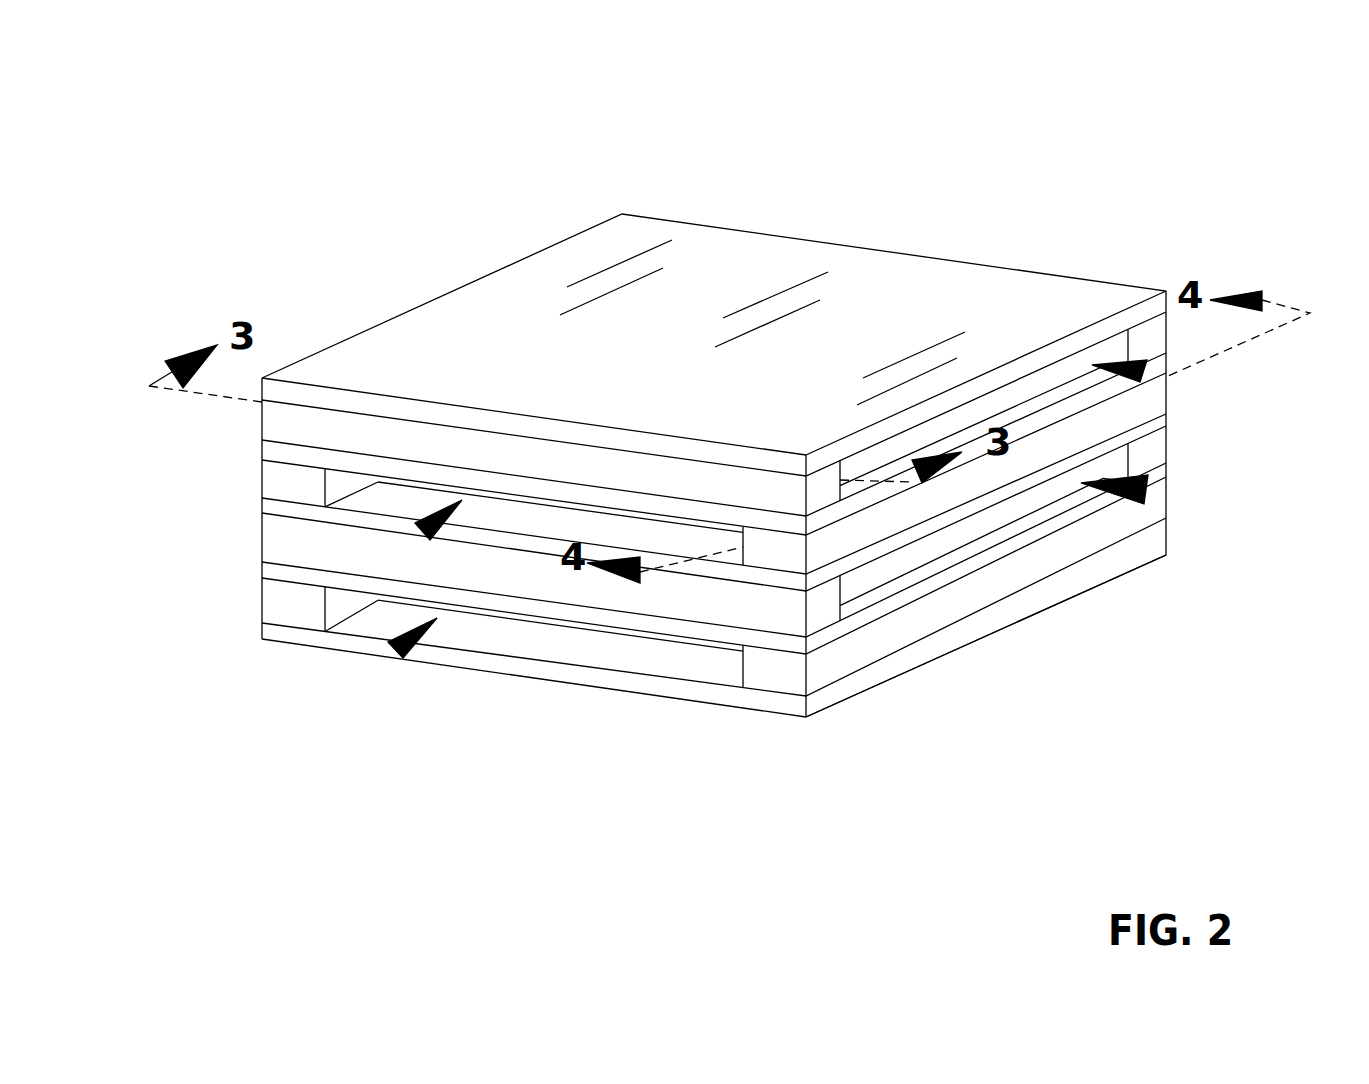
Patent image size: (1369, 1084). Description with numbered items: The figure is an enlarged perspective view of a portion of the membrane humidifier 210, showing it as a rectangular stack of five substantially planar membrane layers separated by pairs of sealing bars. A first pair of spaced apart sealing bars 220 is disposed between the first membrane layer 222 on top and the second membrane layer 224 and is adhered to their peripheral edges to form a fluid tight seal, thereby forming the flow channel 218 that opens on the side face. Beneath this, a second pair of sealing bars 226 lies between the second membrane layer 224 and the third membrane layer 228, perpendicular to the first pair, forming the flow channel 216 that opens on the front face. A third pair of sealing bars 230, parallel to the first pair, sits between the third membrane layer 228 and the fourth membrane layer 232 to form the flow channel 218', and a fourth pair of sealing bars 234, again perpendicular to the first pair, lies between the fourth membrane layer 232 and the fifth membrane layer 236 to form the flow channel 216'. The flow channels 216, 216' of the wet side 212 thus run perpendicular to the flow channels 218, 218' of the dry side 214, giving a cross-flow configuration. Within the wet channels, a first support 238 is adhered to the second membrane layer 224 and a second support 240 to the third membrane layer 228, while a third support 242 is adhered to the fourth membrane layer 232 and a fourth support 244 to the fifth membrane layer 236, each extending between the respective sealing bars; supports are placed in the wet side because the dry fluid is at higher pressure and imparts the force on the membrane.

The membrane humidifier 210 is at (194, 207).
The wet side 212 is at (748, 758).
The dry side 214 is at (1022, 670).
The flow channel 216 is at (260, 511).
The flow channel 216' is at (381, 679).
The flow channel 218 is at (1092, 414).
The flow channel 218' is at (1095, 531).
The first pair of sealing bars 220 is at (742, 488).
The first membrane layer 222 is at (668, 395).
The second membrane layer 224 is at (262, 449).
The second pair of sealing bars 226 is at (277, 481).
The third membrane layer 228 is at (1143, 437).
The third pair of sealing bars 230 is at (1150, 467).
The fourth membrane layer 232 is at (1093, 510).
The fourth pair of sealing bars 234 is at (297, 612).
The fifth membrane layer 236 is at (1037, 597).
The first support 238 is at (410, 483).
The second support 240 is at (515, 530).
The third support 242 is at (517, 620).
The fourth support 244 is at (717, 680).